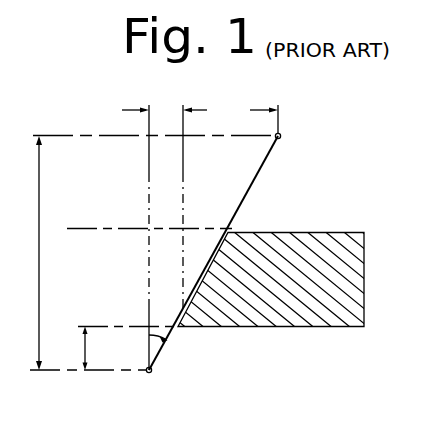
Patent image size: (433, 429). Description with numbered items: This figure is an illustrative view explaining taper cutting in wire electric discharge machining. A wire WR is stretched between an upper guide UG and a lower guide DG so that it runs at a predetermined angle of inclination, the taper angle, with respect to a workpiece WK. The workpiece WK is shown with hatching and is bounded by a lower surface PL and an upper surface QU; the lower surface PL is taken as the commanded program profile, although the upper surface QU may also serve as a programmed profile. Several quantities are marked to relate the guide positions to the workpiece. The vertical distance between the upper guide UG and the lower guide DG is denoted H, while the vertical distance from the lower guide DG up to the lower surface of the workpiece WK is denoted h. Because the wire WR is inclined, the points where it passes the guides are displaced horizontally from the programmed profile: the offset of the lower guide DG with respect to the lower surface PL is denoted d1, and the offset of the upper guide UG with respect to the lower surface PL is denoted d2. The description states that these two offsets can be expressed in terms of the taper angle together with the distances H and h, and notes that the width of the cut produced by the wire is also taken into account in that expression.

The upper guide UG is at (281, 135).
The lower guide DG is at (152, 372).
The wire WR is at (259, 171).
The workpiece WK is at (332, 327).
The upper surface of the workpiece QU is at (230, 232).
The lower surface of the workpiece PL is at (182, 327).
The vertical distance between the upper guide and lower guide H is at (39, 253).
The vertical distance from the lower guide to the lower surface of the workpiece h is at (94, 349).
The offset of the lower guide d1 is at (150, 232).
The offset of the upper guide d2 is at (230, 202).